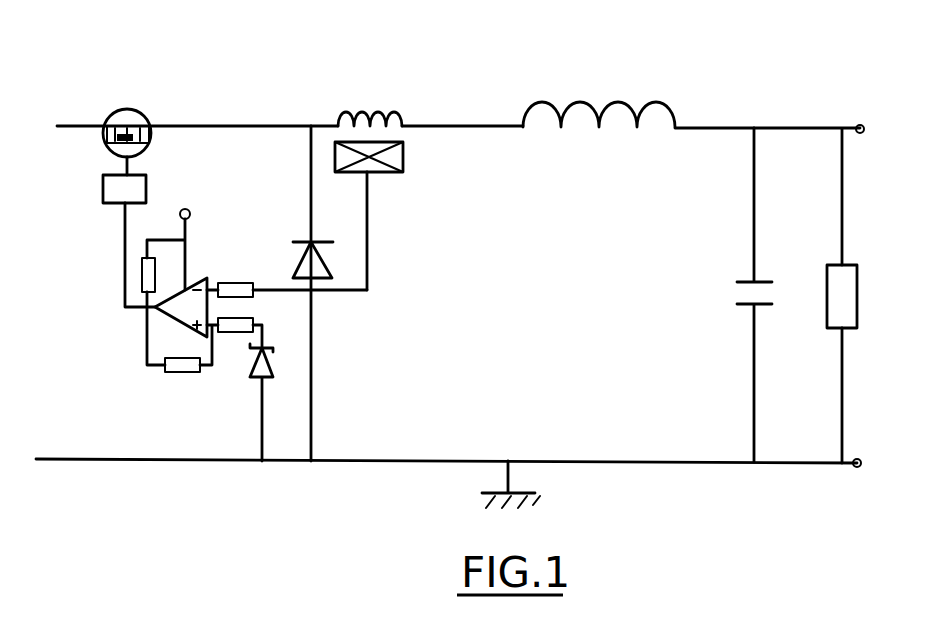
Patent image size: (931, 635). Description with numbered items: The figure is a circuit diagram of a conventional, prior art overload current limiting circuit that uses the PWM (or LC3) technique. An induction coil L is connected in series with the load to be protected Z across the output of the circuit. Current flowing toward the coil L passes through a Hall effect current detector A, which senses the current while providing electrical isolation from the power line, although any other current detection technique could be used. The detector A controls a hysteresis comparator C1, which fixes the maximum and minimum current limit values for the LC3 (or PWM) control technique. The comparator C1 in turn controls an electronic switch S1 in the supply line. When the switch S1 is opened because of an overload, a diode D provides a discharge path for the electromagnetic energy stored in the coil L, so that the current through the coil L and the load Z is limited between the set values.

The electronic switch S1 is at (128, 102).
The hysteresis comparator C1 is at (207, 265).
The diode D is at (312, 240).
The Hall effect current detector A is at (369, 110).
The induction coil L is at (603, 97).
The load to be protected Z is at (735, 310).